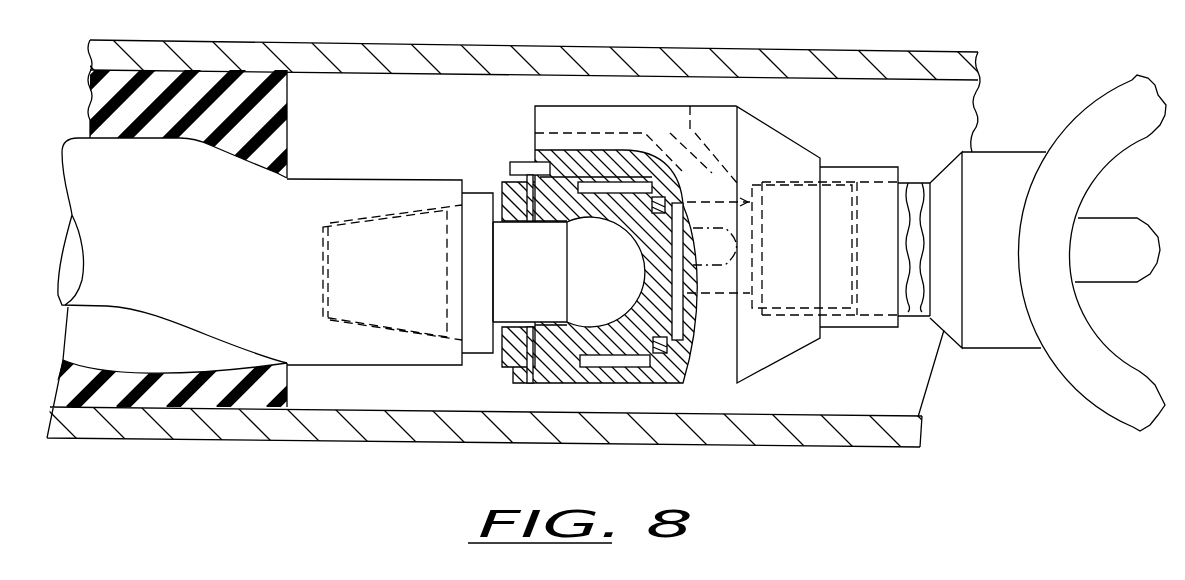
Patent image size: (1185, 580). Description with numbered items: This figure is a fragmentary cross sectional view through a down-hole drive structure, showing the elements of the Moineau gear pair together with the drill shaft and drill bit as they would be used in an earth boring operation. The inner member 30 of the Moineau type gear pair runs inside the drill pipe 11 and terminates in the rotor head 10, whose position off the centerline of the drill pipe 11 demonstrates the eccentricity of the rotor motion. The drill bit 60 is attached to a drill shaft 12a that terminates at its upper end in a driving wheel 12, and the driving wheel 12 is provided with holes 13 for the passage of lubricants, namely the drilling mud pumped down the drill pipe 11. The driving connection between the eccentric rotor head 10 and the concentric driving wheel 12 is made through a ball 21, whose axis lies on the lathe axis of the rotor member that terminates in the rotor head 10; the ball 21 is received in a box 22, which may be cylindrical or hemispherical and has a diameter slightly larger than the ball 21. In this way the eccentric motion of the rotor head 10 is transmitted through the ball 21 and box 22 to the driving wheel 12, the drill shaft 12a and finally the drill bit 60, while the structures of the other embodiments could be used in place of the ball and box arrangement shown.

The drill pipe 11 is at (548, 46).
The driving wheel 12 is at (636, 118).
The drill shaft 12a is at (928, 183).
The holes 13 is at (698, 178).
The box 22 is at (645, 233).
The ball 21 is at (600, 273).
The rotor head 10 is at (355, 178).
The inner member 30 is at (253, 193).
The drill bit 60 is at (1077, 332).